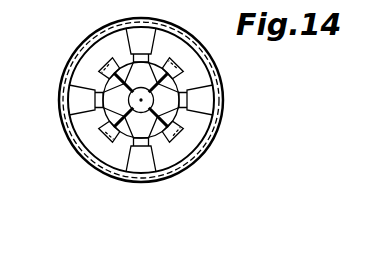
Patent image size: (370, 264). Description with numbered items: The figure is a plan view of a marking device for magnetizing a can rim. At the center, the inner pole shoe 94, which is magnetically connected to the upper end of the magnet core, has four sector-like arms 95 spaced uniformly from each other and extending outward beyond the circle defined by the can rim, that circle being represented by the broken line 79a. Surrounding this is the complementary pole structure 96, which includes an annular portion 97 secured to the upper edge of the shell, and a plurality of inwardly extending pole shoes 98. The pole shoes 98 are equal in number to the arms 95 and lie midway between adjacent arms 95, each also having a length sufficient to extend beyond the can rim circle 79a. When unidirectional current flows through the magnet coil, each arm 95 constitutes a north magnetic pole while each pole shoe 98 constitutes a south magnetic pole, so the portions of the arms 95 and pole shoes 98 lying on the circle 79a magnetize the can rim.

The complementary pole structure 96 is at (57, 122).
The annular portion 97 is at (176, 32).
The inwardly extending pole shoes 98 is at (150, 150).
The sector-like arms 95 is at (184, 82).
The inner pole shoe 94 is at (104, 143).
The can rim circle 79a is at (182, 80).